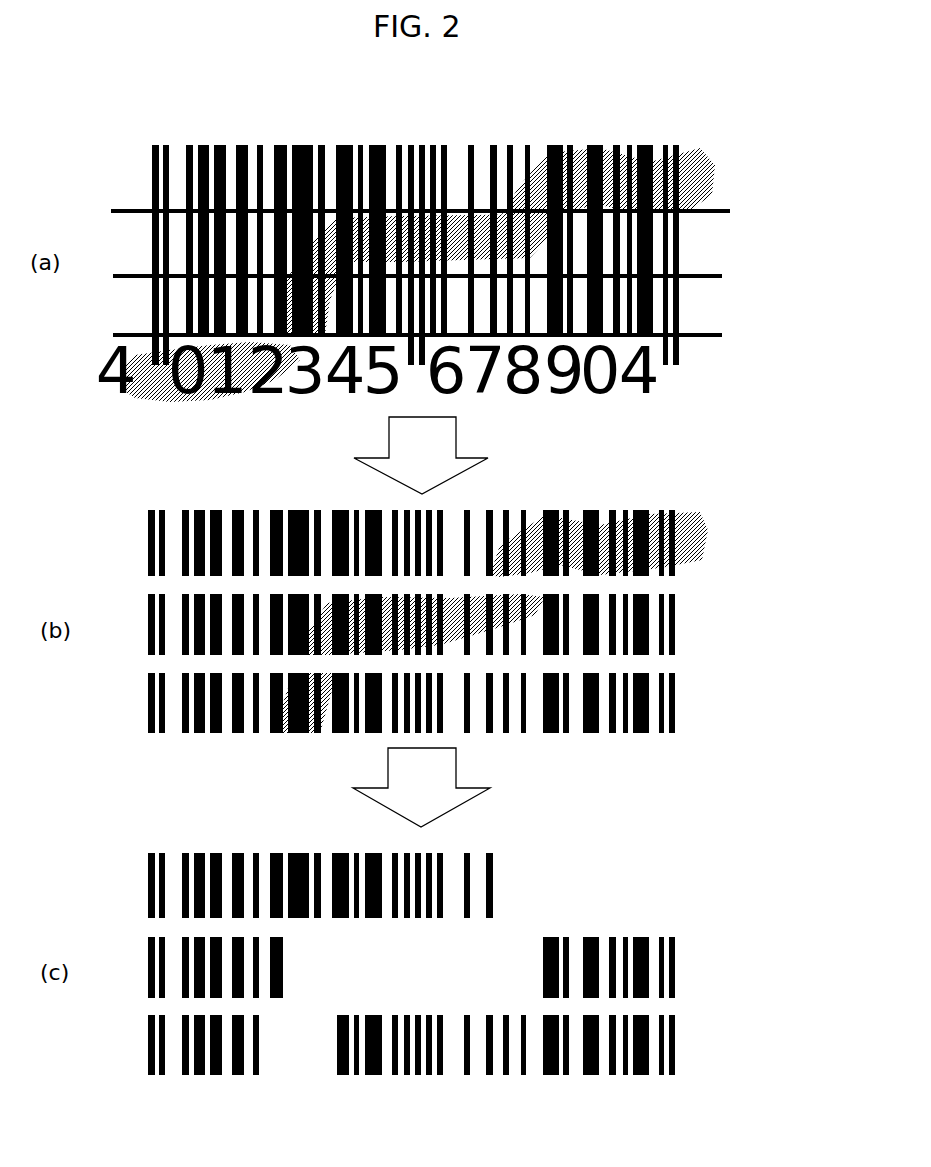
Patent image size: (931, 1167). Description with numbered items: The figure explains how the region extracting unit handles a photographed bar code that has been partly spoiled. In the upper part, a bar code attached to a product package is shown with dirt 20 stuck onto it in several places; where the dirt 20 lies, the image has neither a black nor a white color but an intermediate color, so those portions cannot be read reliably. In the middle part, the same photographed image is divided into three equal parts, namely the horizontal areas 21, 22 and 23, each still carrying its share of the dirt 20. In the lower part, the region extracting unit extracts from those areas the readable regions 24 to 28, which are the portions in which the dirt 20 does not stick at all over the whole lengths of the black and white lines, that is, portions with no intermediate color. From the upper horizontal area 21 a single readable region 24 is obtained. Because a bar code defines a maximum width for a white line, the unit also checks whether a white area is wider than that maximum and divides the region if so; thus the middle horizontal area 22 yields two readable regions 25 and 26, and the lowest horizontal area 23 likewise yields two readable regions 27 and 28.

The dirt 20 is at (690, 160).
The horizontal area 21 is at (723, 547).
The horizontal area 22 is at (723, 625).
The horizontal area 23 is at (723, 703).
The readable region 24 is at (510, 890).
The readable region 25 is at (297, 977).
The readable region 26 is at (690, 967).
The readable region 27 is at (273, 1057).
The readable region 28 is at (690, 1043).